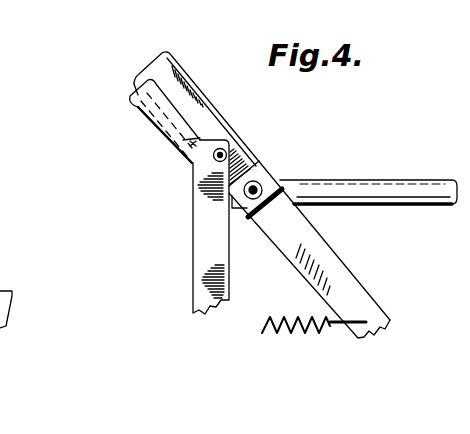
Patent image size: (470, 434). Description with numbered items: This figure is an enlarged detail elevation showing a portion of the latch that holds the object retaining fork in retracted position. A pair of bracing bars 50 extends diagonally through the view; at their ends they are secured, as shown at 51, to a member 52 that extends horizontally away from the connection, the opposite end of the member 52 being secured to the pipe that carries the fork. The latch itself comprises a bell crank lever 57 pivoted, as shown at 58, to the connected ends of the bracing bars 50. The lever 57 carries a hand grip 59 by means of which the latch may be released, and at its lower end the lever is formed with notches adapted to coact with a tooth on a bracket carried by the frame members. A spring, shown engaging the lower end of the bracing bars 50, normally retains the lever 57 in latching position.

The bracing bars 50 is at (351, 291).
The securing point of bracing bars to member 51 is at (266, 172).
The member 52 is at (388, 190).
The bell crank lever 57 is at (210, 247).
The pivot of bell crank lever 58 is at (228, 152).
The hand grip 59 is at (152, 116).